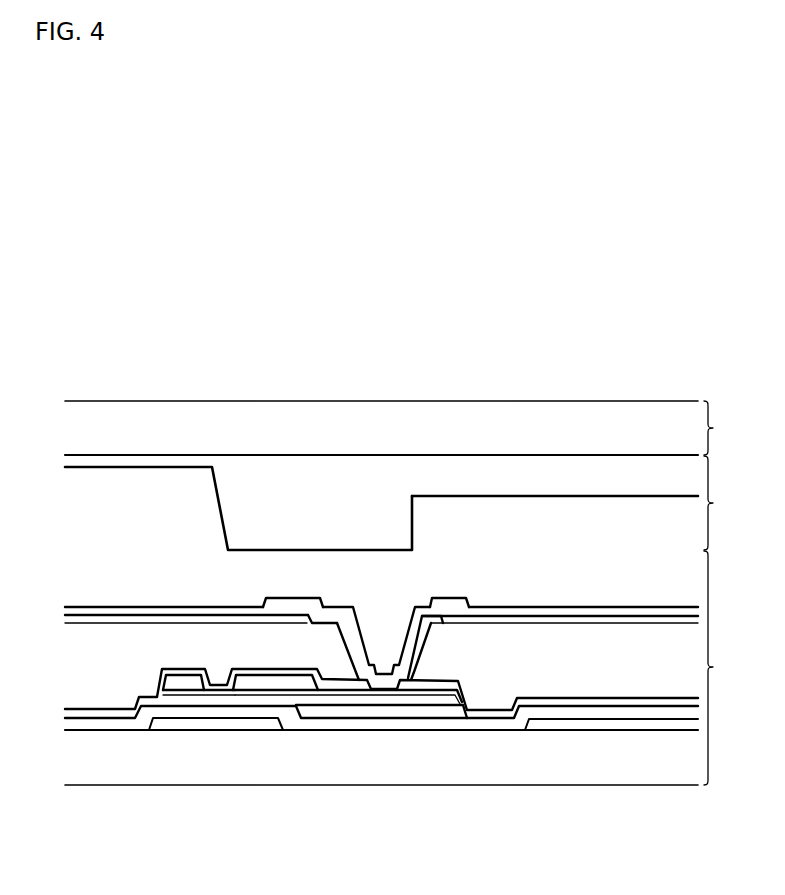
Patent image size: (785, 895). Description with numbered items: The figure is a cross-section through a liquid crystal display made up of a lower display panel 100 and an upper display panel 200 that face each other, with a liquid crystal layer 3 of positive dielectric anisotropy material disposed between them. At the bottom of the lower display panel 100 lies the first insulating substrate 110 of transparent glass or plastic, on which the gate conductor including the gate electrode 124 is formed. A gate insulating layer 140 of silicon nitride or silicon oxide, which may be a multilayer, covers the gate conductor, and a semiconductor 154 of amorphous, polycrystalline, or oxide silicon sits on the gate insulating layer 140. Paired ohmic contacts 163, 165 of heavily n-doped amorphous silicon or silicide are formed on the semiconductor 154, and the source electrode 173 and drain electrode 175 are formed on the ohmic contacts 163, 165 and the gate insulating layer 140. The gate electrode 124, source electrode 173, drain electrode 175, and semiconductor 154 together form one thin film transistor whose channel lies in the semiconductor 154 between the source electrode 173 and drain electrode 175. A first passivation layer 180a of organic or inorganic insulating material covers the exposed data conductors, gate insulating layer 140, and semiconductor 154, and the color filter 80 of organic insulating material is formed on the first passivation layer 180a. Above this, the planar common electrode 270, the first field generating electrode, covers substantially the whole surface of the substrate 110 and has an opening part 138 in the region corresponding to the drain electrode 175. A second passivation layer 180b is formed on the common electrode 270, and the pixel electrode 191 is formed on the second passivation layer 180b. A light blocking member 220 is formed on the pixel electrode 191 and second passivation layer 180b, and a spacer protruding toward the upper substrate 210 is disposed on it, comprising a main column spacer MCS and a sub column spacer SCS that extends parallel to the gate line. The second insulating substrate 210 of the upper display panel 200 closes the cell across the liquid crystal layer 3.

The liquid crystal layer 3 is at (718, 503).
The color filter 80 is at (548, 672).
The lower display panel 100 is at (729, 668).
The first insulating substrate 110 is at (673, 765).
The gate electrode 124 is at (255, 724).
The opening part 138 is at (312, 616).
The gate insulating layer 140 is at (93, 724).
The semiconductor 154 is at (323, 712).
The ohmic contact 163 is at (190, 692).
The ohmic contact 165 is at (360, 703).
The source electrode 173 is at (175, 683).
The drain electrode 175 is at (408, 695).
The first passivation layer 180a is at (480, 714).
The second passivation layer 180b is at (103, 612).
The pixel electrode 191 is at (450, 600).
The upper display panel 200 is at (729, 428).
The second insulating substrate 210 is at (583, 420).
The light blocking member 220 is at (523, 582).
The common electrode 270 is at (115, 620).
The main column spacer MCS is at (186, 497).
The sub column spacer SCS is at (650, 510).